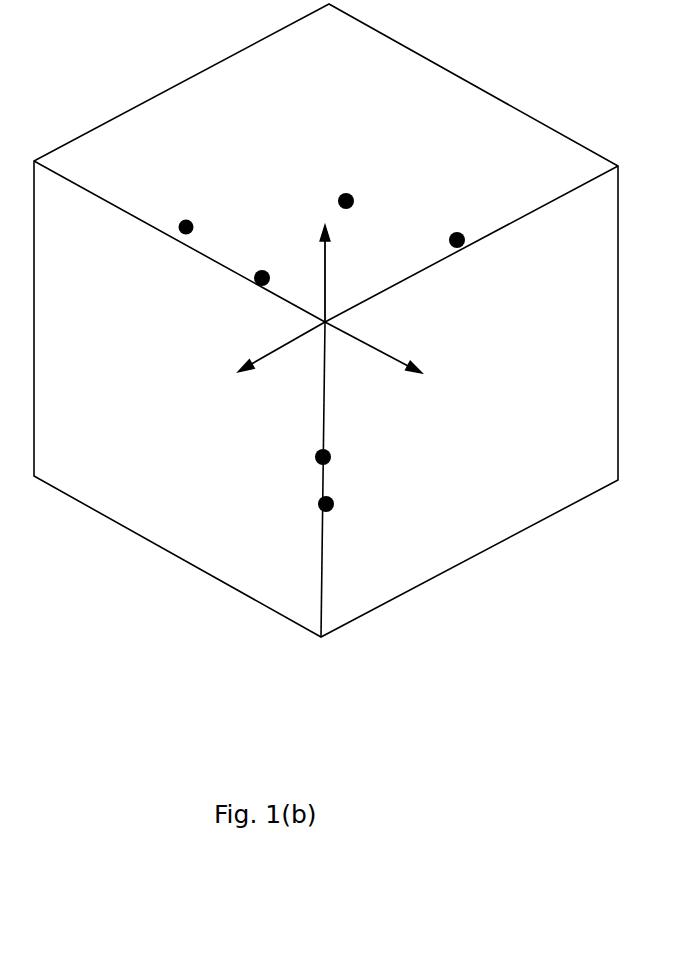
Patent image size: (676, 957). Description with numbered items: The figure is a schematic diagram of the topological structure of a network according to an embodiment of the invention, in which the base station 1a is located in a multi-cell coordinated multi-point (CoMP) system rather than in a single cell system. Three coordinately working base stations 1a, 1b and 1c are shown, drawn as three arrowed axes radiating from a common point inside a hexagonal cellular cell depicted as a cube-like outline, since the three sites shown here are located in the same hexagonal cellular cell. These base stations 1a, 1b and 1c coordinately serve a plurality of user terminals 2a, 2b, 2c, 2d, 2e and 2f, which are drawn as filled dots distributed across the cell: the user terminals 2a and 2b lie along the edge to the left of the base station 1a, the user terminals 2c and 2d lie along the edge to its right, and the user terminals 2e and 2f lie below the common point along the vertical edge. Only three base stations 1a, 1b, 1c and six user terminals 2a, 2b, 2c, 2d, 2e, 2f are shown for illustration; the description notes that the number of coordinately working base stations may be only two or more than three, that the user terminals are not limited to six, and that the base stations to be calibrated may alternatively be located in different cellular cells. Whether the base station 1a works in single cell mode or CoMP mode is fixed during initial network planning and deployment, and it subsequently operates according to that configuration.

The base station 1a is at (325, 294).
The base station 1b is at (266, 352).
The base station 1c is at (378, 347).
The user terminal 2a is at (192, 222).
The user terminal 2b is at (268, 274).
The user terminal 2c is at (352, 197).
The user terminal 2d is at (462, 235).
The user terminal 2e is at (329, 453).
The user terminal 2f is at (332, 500).